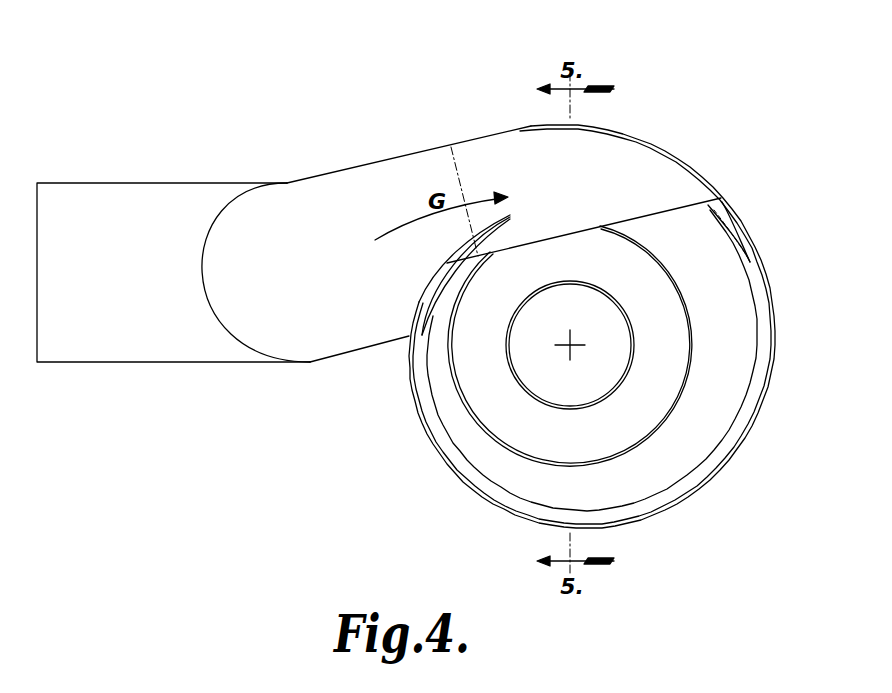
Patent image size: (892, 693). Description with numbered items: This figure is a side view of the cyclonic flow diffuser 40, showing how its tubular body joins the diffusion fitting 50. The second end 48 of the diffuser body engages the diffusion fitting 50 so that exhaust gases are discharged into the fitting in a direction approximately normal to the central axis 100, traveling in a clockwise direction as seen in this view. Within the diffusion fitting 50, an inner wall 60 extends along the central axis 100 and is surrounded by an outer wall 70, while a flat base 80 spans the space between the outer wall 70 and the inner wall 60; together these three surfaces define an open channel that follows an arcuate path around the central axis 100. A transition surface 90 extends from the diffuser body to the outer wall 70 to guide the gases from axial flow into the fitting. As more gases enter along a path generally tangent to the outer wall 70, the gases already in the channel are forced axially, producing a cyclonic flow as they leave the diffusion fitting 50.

The cyclonic flow diffuser 40 is at (319, 101).
The second end of the body 48 is at (230, 258).
The diffusion fitting 50 is at (754, 247).
The inner wall 60 is at (618, 425).
The outer wall 70 is at (723, 460).
The flat base 80 is at (725, 333).
The transition surface 90 is at (625, 165).
The central axis 100 is at (571, 348).